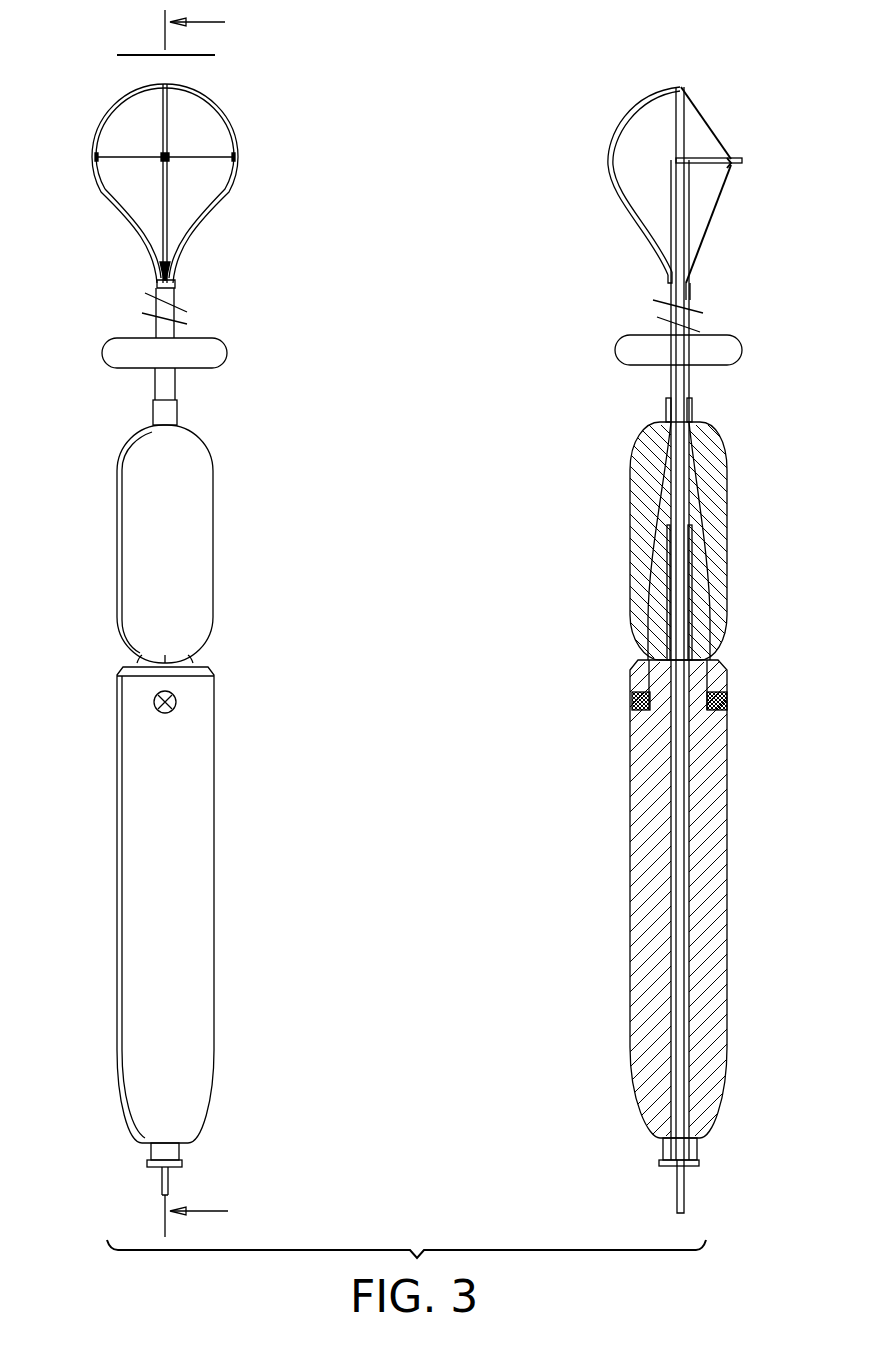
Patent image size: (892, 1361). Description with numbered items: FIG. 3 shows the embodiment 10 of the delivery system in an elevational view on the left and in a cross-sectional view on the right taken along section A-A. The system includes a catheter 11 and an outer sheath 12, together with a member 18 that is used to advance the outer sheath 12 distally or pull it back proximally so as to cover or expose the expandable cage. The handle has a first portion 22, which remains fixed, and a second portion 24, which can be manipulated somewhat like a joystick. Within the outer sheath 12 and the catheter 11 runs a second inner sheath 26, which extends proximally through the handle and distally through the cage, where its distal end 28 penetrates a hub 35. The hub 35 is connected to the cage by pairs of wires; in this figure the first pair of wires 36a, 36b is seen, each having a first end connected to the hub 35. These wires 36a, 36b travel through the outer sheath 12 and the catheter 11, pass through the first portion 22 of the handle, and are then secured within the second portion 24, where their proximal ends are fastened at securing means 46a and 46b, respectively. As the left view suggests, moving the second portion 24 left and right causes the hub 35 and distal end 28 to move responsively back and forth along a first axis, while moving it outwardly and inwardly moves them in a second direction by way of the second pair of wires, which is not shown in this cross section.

The embodiment 10 is at (247, 869).
The catheter 11 is at (668, 378).
The outer sheath 12 is at (663, 320).
The member 18 is at (613, 340).
The first portion 22 is at (633, 470).
The second portion 24 is at (630, 970).
The second inner sheath 26 is at (678, 1192).
The distal end 28 is at (740, 158).
The hub 35 is at (731, 167).
The wire 36a is at (735, 106).
The wire 36b is at (706, 238).
The securing means 46a is at (632, 700).
The securing means 46b is at (713, 712).